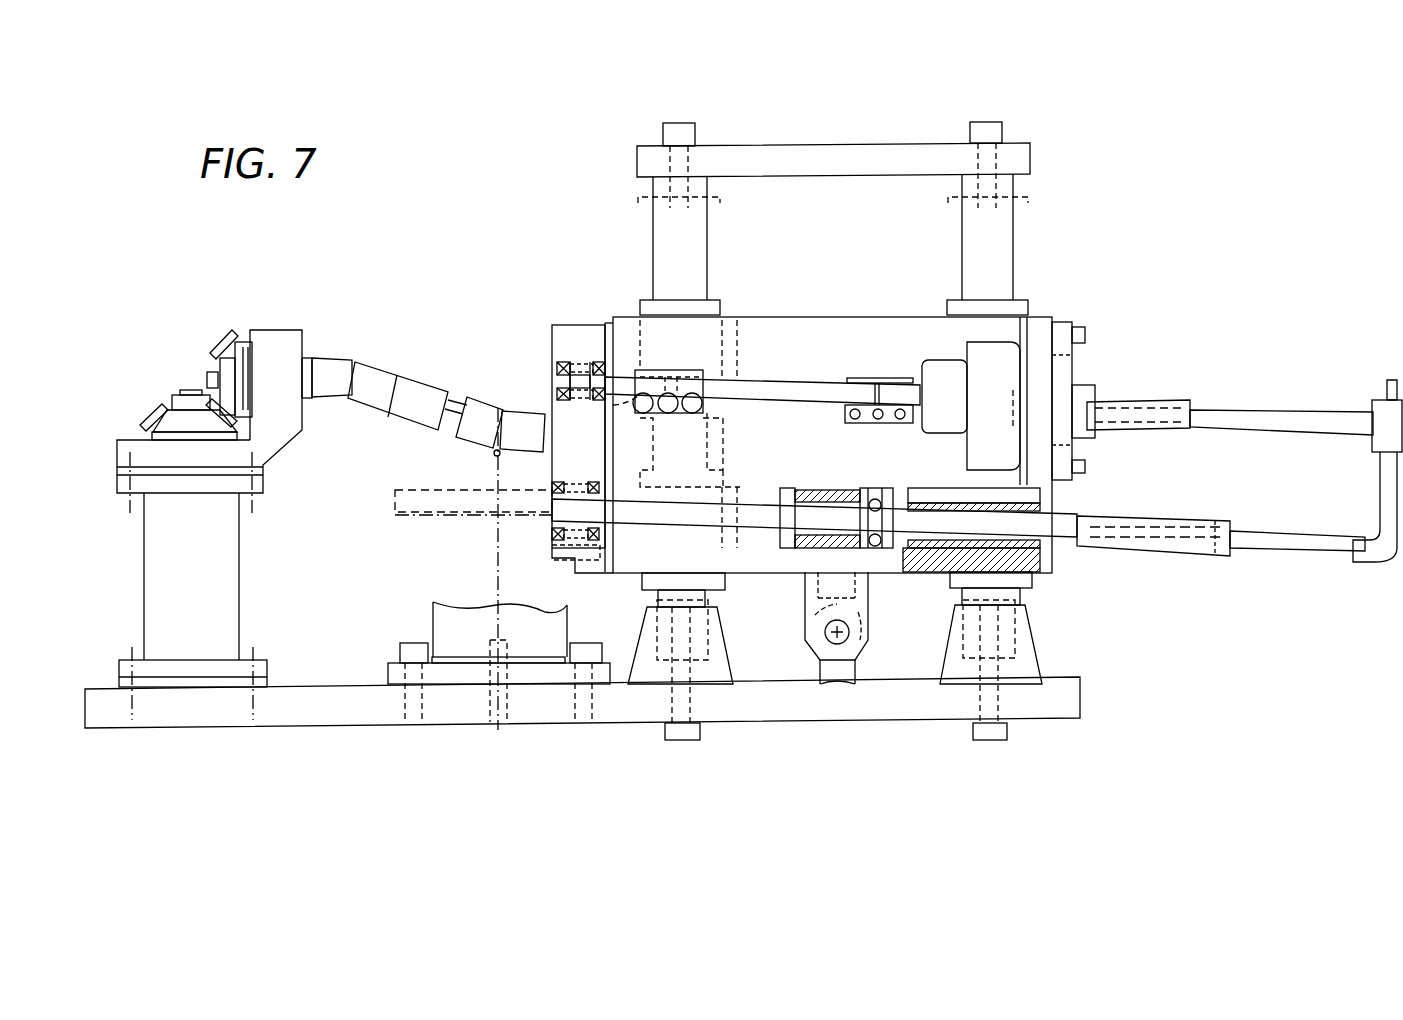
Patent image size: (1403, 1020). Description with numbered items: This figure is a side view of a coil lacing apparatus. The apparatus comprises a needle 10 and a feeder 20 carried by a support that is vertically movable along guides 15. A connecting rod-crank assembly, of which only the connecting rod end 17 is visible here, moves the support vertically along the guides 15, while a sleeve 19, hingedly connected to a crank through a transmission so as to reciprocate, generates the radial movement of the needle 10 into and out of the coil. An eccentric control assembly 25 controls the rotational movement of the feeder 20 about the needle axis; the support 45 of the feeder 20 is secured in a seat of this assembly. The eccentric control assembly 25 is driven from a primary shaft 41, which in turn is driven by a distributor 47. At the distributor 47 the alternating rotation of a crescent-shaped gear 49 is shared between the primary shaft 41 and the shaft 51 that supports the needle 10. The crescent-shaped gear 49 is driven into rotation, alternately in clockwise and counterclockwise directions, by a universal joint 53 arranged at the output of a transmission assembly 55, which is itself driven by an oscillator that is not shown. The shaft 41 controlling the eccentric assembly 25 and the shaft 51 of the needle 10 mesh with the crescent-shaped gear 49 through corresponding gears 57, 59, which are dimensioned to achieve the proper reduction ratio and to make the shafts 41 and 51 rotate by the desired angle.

The needle 10 is at (1275, 540).
The guides 15 is at (653, 248).
The connecting rod end 17 is at (863, 643).
The sleeve 19 is at (823, 492).
The feeder 20 is at (1365, 558).
The eccentric control assembly 25 is at (997, 387).
The primary shaft 41 is at (800, 388).
The support 45 is at (1272, 418).
The distributor 47 is at (553, 330).
The crescent-shaped gear 49 is at (580, 442).
The shaft 51 is at (628, 510).
The universal joint 53 is at (372, 378).
The transmission assembly 55 is at (285, 445).
The gear 57 is at (552, 410).
The gear 59 is at (538, 542).